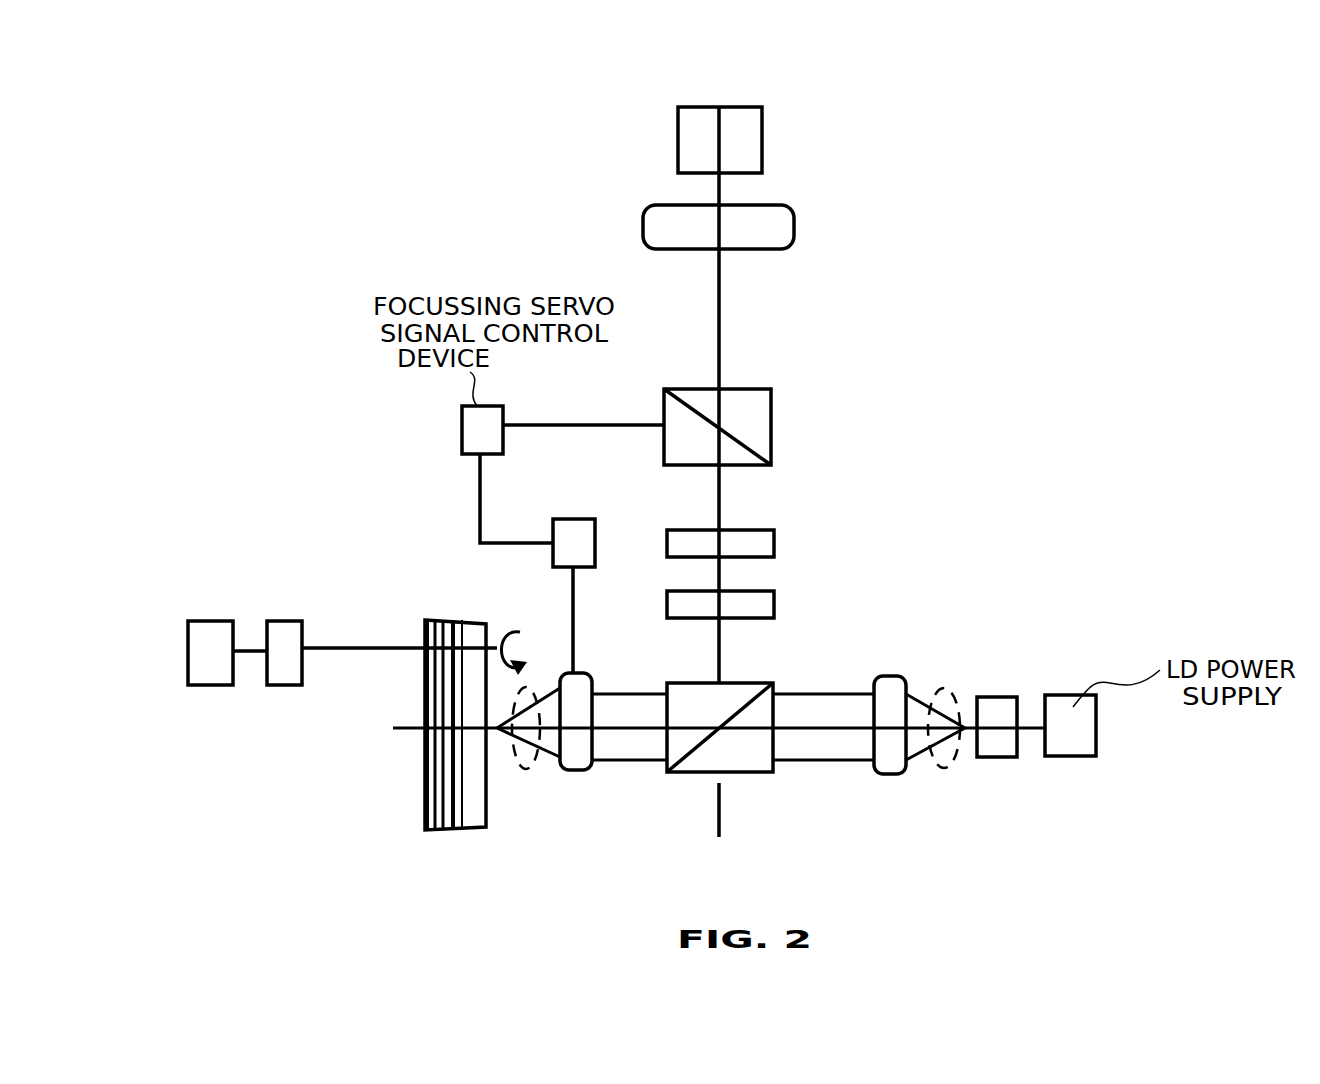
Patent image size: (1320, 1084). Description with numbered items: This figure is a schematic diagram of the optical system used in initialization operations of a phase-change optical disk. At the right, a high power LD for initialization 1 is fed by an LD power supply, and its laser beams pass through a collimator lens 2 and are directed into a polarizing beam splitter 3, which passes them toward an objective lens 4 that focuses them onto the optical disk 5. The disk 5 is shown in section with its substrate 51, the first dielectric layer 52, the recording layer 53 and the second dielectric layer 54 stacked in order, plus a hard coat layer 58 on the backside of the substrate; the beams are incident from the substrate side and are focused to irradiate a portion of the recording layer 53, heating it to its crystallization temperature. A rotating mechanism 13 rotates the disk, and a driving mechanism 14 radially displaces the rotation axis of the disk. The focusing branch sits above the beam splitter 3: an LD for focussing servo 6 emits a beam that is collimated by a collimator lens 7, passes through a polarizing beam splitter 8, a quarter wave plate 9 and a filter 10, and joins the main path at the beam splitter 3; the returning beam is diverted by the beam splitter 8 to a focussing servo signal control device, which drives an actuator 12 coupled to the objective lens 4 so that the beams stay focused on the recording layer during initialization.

The substrate 1 is at (995, 740).
The collimator lens 2 is at (890, 676).
The polarizing beam splitter 3 is at (755, 772).
The objective lens 4 is at (582, 770).
The optical disk 5 is at (346, 751).
The LD for focussing servo 6 is at (762, 138).
The collimator lens 7 is at (794, 227).
The polarizing beam splitter 8 is at (771, 418).
The quarter wave plate 9 is at (774, 543).
The filter 10 is at (774, 605).
The actuator 12 is at (573, 519).
The rotating mechanism 13 is at (293, 621).
The driving mechanism 14 is at (203, 621).
The substrate 51 is at (457, 832).
The first dielectric layer 52 is at (437, 832).
The recording layer 53 is at (425, 826).
The second dielectric layer 54 is at (425, 768).
The hard coat layer 58 is at (478, 832).